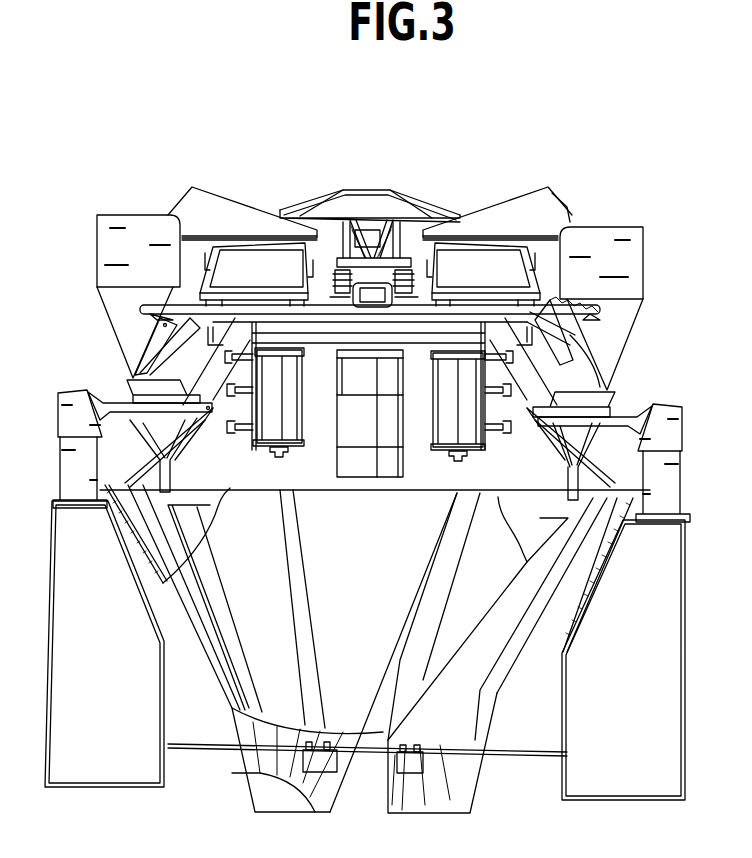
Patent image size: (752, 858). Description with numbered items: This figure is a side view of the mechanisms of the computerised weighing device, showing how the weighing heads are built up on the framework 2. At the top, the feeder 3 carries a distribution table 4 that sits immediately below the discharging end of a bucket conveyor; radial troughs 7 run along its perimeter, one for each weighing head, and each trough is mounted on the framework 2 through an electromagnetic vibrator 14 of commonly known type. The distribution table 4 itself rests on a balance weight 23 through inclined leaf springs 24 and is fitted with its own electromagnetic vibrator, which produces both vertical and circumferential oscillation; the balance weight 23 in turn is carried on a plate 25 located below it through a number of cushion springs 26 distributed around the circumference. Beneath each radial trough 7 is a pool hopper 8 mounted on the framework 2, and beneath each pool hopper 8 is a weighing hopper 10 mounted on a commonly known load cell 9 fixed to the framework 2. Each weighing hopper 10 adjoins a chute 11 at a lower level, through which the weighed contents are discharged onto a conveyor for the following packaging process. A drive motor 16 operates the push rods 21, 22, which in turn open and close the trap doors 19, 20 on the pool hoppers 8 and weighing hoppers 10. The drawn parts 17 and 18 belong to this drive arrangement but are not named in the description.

The framework 2 is at (426, 470).
The feeder 3 is at (485, 200).
The distribution table 4 is at (410, 208).
The radial trough 7 is at (216, 205).
The pool hopper 8 is at (114, 298).
The load cell 9 is at (70, 408).
The weighing hopper 10 is at (133, 388).
The chute 11 is at (256, 652).
The electromagnetic vibrator 14 is at (292, 255).
The drive motor 16 is at (338, 465).
The drive shaft 17 is at (318, 430).
The actuator cylinder 18 is at (270, 468).
The trap door 19 is at (153, 340).
The trap door 20 is at (132, 452).
The push rod 21 is at (175, 362).
The push rod 22 is at (208, 470).
The balance weight 23 is at (348, 292).
The inclined leaf spring 24 is at (357, 215).
The plate 25 is at (430, 290).
The cushion spring 26 is at (508, 240).